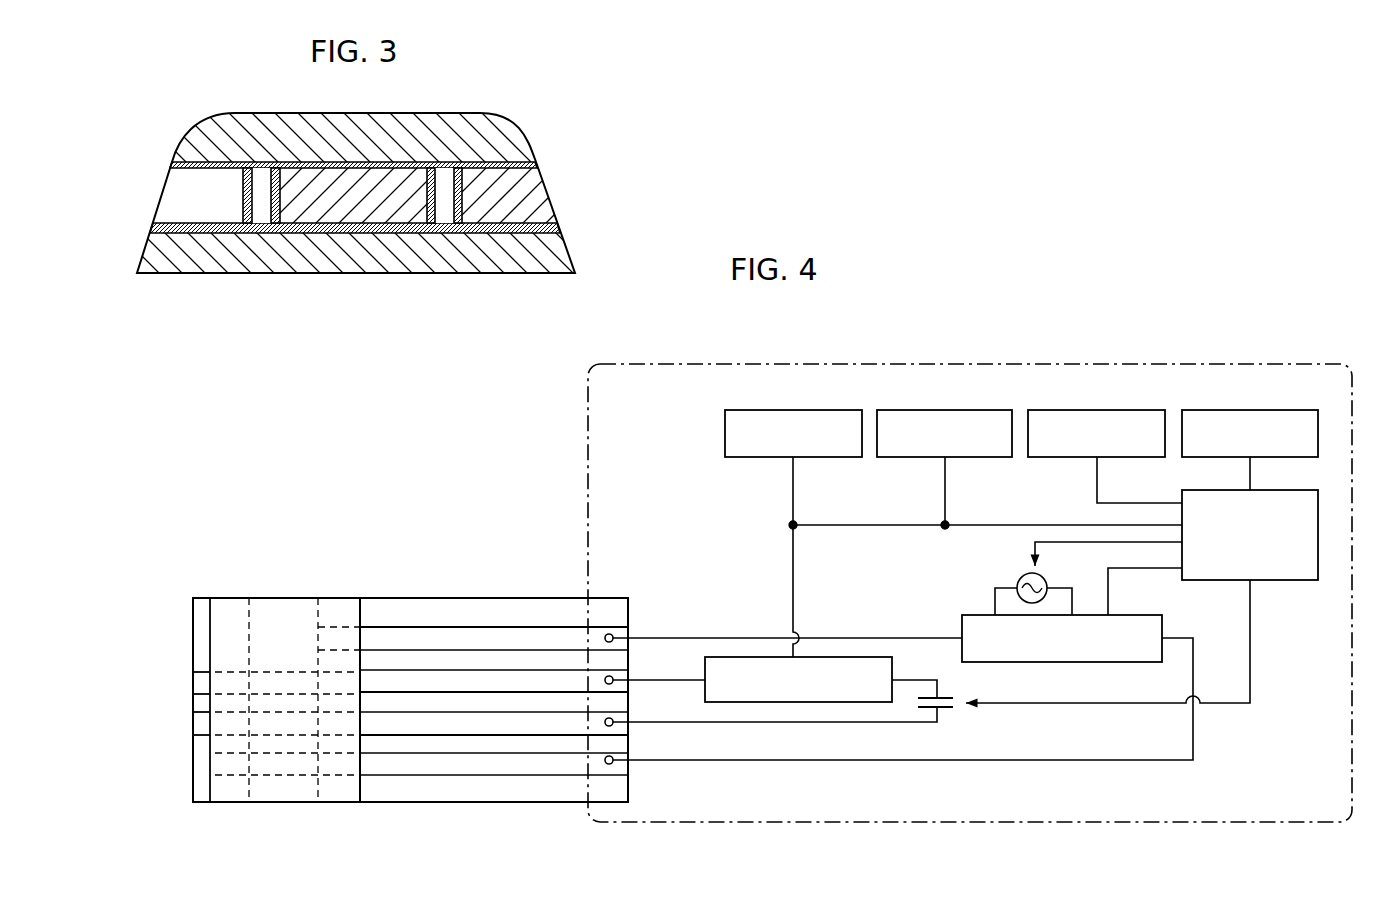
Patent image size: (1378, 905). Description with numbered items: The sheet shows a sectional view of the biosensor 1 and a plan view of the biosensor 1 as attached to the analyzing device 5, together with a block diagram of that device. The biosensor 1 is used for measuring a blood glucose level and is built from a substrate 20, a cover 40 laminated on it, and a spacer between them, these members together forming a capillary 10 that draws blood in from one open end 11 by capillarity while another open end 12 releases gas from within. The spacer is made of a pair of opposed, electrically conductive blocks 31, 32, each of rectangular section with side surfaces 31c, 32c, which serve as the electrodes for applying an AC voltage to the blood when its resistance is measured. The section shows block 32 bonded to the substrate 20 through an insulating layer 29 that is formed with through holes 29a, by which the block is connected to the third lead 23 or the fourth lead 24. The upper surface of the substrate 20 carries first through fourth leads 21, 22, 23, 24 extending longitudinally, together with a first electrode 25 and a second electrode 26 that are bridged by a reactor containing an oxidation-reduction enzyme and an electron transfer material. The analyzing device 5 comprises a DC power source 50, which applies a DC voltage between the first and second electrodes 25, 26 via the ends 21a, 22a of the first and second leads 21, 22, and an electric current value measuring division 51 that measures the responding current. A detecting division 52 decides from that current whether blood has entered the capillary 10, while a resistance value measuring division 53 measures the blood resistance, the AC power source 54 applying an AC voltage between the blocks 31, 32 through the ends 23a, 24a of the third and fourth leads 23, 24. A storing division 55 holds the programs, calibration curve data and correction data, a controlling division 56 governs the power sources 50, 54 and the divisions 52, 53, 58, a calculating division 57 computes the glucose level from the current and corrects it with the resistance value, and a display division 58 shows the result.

In FIG. 4, the biosensor 1 is at (383, 571).
In FIG. 4, the analyzing device 5 is at (1066, 350).
In FIG. 4, the capillary 10 is at (274, 623).
In FIG. 4, the open end 11 is at (287, 598).
In FIG. 4, the open end 12 is at (280, 802).
In FIG. 3, the substrate 20 is at (368, 253).
In FIG. 4, the first lead 21 is at (461, 676).
In FIG. 4, the end of the first lead 21a is at (608, 676).
In FIG. 4, the second lead 22 is at (448, 731).
In FIG. 4, the end of the second lead 22a is at (608, 718).
In FIG. 4, the third lead 23 is at (414, 636).
In FIG. 4, the end of the third lead 23a is at (606, 632).
In FIG. 4, the fourth lead 24 is at (399, 769).
In FIG. 4, the end of the fourth lead 24a is at (608, 771).
In FIG. 4, the first electrode 25 is at (275, 690).
In FIG. 3, the second electrode 26 is at (492, 232).
In FIG. 4, the second electrode 26 is at (275, 730).
In FIG. 3, the insulating layer 29 is at (323, 215).
In FIG. 3, the through hole 29a is at (268, 198).
In FIG. 4, the block 31 is at (338, 795).
In FIG. 4, the side surface 31c is at (318, 611).
In FIG. 3, the block 32 is at (423, 118).
In FIG. 4, the block 32 is at (229, 796).
In FIG. 4, the side surface 32c is at (252, 609).
In FIG. 4, the cover 40 is at (213, 638).
In FIG. 4, the DC power source 50 is at (955, 712).
In FIG. 4, the electric current value measuring division 51 is at (871, 656).
In FIG. 4, the detecting division 52 is at (801, 410).
In FIG. 4, the resistance value measuring division 53 is at (1078, 663).
In FIG. 4, the AC power source 54 is at (1017, 582).
In FIG. 4, the storing division 55 is at (1100, 410).
In FIG. 4, the controlling division 56 is at (1284, 492).
In FIG. 4, the calculating division 57 is at (950, 410).
In FIG. 4, the display division 58 is at (1266, 410).